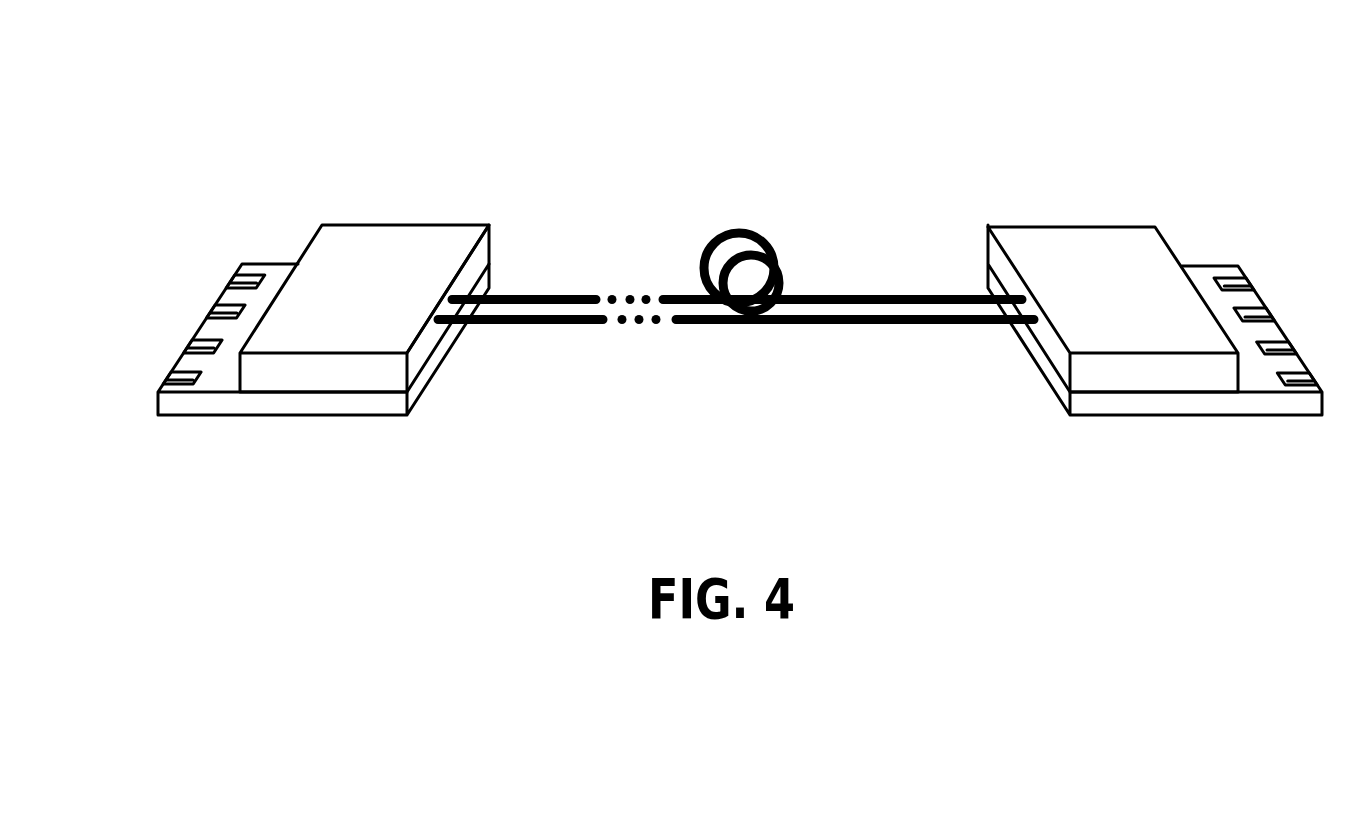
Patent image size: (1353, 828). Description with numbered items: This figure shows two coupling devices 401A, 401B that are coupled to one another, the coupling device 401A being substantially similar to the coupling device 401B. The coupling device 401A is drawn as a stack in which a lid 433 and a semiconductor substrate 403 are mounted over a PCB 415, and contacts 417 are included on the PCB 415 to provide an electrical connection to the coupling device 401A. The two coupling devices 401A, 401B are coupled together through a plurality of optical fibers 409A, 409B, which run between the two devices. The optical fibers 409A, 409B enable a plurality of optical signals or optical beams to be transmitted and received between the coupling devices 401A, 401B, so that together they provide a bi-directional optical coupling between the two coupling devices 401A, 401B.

The coupling device 401A is at (332, 294).
The coupling device 401B is at (1083, 207).
The semiconductor substrate 403 is at (402, 292).
The PCB 415 is at (315, 416).
The contacts 417 is at (170, 378).
The lid 433 is at (492, 214).
The optical fiber 409A is at (853, 294).
The optical fiber 409B is at (862, 330).